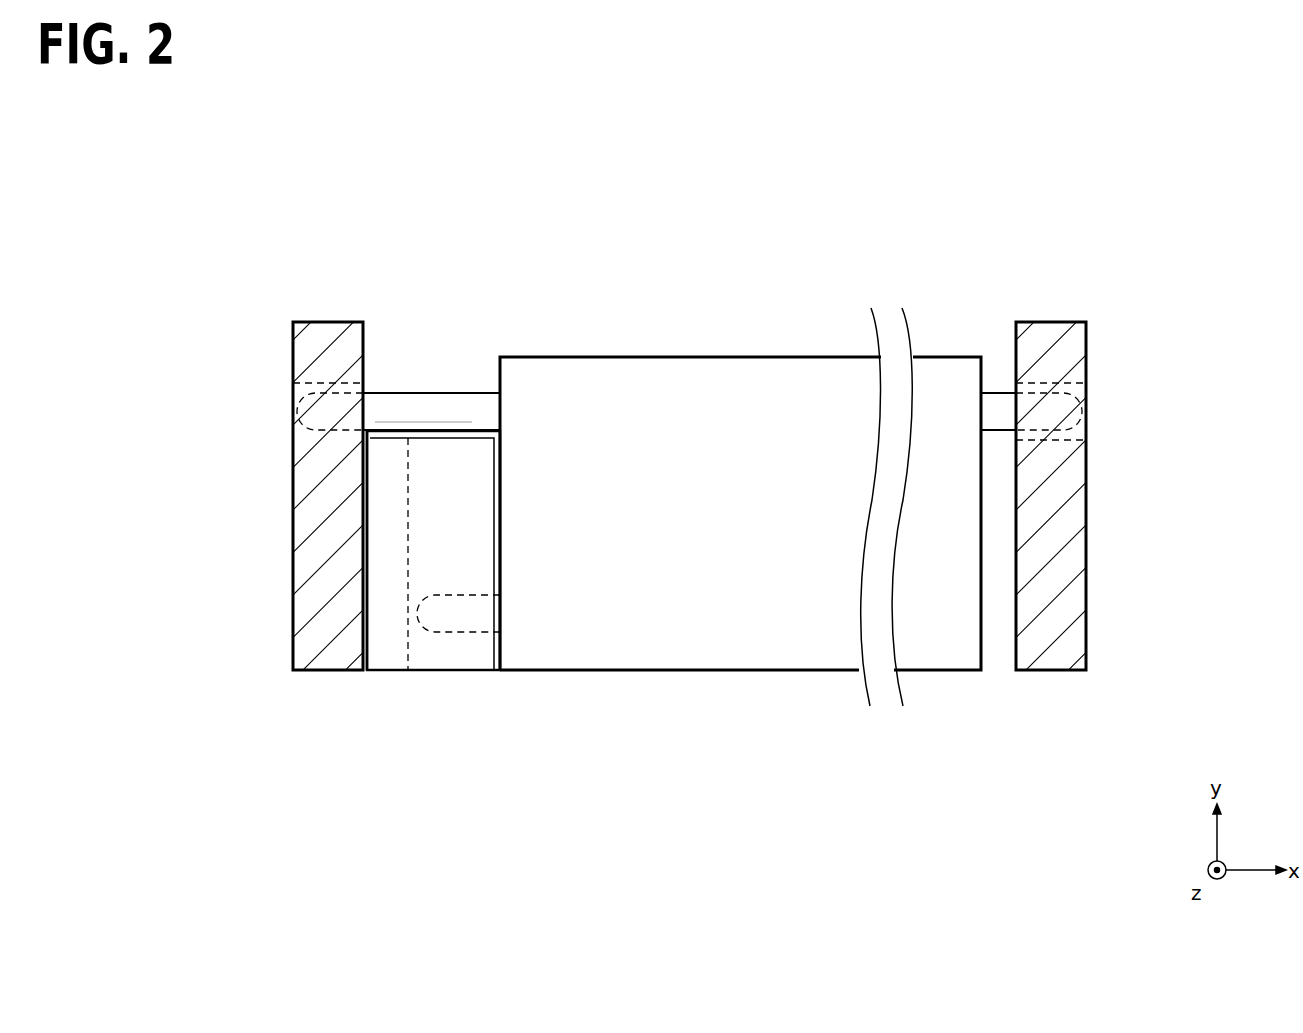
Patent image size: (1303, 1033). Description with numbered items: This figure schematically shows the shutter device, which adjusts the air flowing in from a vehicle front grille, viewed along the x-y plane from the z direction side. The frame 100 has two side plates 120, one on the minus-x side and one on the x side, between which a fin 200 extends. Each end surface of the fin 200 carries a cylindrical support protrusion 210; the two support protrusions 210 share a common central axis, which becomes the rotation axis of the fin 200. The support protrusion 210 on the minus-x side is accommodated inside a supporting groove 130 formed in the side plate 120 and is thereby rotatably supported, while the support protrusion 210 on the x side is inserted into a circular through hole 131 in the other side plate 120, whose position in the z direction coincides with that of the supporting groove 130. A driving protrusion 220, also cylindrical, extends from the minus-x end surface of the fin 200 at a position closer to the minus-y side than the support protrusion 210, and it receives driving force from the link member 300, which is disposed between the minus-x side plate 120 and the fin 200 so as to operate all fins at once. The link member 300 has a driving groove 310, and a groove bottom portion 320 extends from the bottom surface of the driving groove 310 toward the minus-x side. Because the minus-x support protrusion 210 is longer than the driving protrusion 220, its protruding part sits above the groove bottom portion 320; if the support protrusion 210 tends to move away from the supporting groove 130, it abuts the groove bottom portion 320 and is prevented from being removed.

The frame 100 is at (723, 513).
The side plate 120 is at (328, 322).
The supporting groove 130 is at (325, 386).
The through hole 131 is at (1058, 382).
The fin 200 is at (732, 382).
The support protrusion 210 is at (433, 407).
The driving protrusion 220 is at (463, 632).
The link member 300 is at (388, 672).
The driving groove 310 is at (408, 652).
The groove bottom portion 320 is at (385, 586).